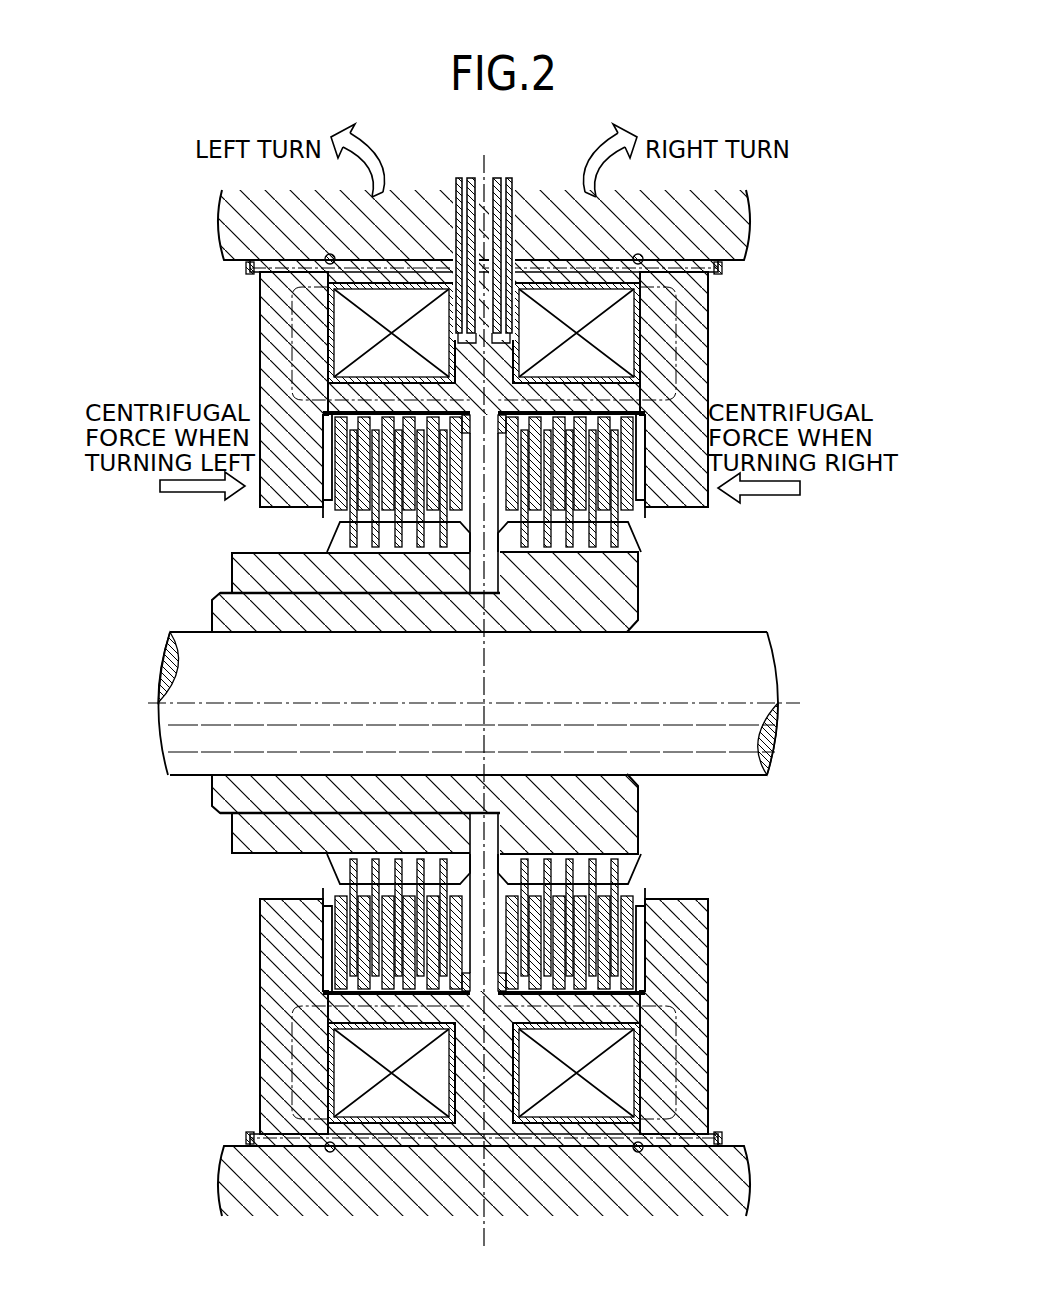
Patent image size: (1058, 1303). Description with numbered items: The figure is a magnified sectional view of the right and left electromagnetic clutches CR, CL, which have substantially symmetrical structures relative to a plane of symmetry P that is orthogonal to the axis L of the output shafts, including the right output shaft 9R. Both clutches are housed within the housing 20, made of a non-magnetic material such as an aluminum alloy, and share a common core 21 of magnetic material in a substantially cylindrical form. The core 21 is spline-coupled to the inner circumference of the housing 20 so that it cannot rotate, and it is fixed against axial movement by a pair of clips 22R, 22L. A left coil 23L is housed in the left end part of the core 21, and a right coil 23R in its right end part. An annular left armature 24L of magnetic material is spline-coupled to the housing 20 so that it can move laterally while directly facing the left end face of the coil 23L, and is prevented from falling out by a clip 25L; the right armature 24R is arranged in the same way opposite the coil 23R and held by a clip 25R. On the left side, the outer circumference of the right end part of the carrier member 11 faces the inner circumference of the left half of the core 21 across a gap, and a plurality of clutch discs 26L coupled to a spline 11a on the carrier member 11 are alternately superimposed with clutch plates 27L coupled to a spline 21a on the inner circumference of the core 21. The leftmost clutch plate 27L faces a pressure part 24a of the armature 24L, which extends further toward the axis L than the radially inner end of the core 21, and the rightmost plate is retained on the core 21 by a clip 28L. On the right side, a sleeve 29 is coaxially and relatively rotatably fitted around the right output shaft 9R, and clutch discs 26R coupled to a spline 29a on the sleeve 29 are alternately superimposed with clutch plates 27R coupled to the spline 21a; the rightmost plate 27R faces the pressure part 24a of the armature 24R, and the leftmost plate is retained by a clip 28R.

The housing 20 is at (557, 198).
The clip 22L is at (327, 255).
The clip 22R is at (641, 255).
The clip 25L is at (247, 270).
The clip 25R is at (717, 276).
The left armature 24L is at (258, 332).
The right armature 24R is at (710, 330).
The left coil 23L is at (418, 316).
The right coil 23R is at (600, 316).
The clutch plates 27L is at (364, 417).
The clutch plates 27R is at (604, 417).
The clip 28L is at (426, 380).
The clip 28R is at (580, 417).
The clutch discs 26L is at (397, 548).
The clutch discs 26R is at (592, 548).
The core 21 is at (503, 401).
The spline 21a is at (330, 417).
The pressure part 24a is at (328, 493).
The carrier member 11 is at (238, 553).
The spline 11a is at (462, 592).
The sleeve 29 is at (640, 598).
The spline 29a is at (634, 543).
The right output shaft 9R is at (680, 768).
The axis L is at (795, 707).
The plane of symmetry P is at (487, 178).
The left electromagnetic clutch CL is at (319, 445).
The right electromagnetic clutch CR is at (647, 445).